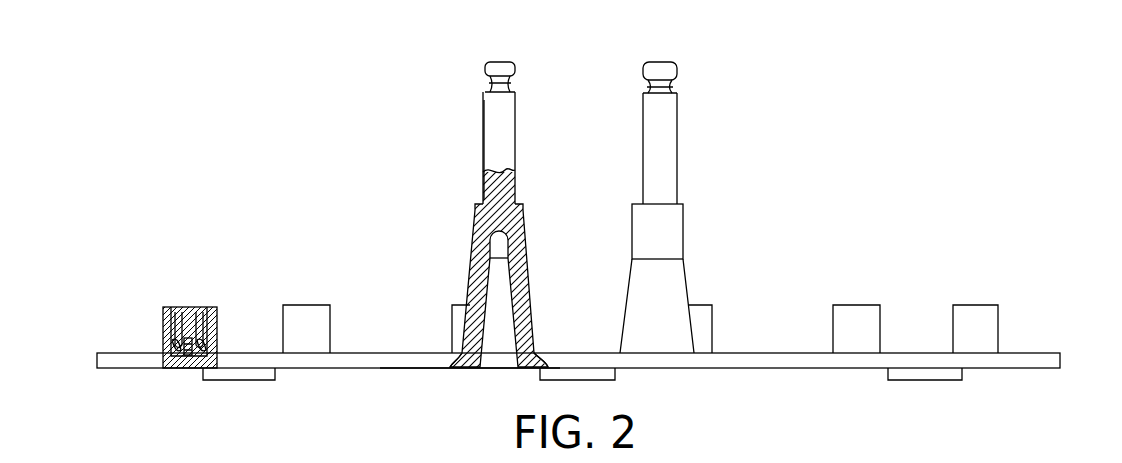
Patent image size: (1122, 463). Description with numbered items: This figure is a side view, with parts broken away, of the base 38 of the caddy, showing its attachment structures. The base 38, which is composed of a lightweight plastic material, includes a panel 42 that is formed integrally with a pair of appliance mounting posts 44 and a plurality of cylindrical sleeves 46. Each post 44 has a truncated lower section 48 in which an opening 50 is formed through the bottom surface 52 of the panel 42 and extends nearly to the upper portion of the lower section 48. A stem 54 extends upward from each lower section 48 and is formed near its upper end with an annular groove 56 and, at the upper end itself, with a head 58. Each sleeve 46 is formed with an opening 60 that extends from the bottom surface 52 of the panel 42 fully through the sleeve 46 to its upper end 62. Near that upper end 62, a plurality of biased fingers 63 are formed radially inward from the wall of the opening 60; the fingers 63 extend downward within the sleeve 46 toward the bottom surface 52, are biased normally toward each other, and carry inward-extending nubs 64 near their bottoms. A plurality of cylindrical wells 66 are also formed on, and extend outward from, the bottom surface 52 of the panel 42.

The base 38 is at (873, 163).
The panel 42 is at (97, 362).
The appliance mounting post 44 is at (483, 137).
The cylindrical sleeve 46 is at (1000, 333).
The truncated lower section 48 is at (478, 232).
The opening 50 is at (482, 327).
The bottom surface 52 is at (412, 368).
The stem 54 is at (507, 148).
The annular groove 56 is at (510, 87).
The head 58 is at (492, 62).
The opening 60 is at (188, 308).
The upper end 62 is at (167, 307).
The biased finger 63 is at (204, 306).
The nub 64 is at (192, 356).
The cylindrical well 66 is at (278, 377).